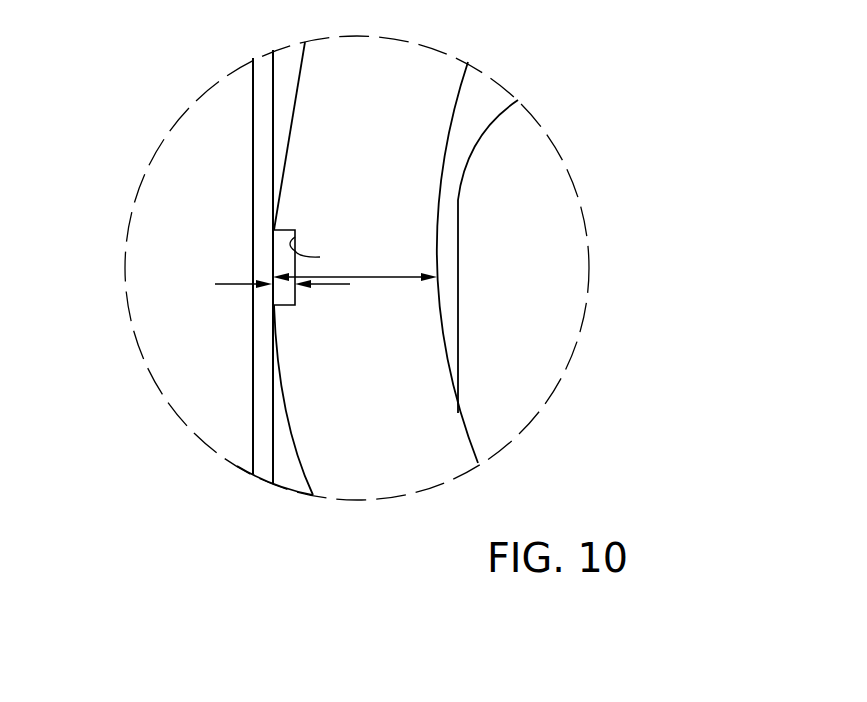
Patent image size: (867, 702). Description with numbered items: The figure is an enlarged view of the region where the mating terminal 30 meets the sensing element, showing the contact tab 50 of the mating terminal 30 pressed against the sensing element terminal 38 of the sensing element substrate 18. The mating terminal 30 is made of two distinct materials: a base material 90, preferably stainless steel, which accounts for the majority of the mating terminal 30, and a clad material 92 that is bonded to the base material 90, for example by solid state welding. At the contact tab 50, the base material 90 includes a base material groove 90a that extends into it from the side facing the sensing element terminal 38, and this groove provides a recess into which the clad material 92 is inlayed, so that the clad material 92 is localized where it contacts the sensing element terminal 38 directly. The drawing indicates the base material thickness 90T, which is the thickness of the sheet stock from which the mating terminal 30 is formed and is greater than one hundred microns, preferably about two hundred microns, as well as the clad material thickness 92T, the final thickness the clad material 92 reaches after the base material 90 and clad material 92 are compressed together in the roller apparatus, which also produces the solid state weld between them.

The sensing element substrate 18 is at (207, 118).
The sensing element terminal 38 is at (263, 466).
The mating terminal 30 is at (396, 322).
The contact tab 50 is at (396, 322).
The base material 90 is at (347, 463).
The base material groove 90a is at (320, 257).
The base material thickness 90T is at (400, 277).
The clad material 92 is at (272, 239).
The clad material thickness 92T is at (225, 284).